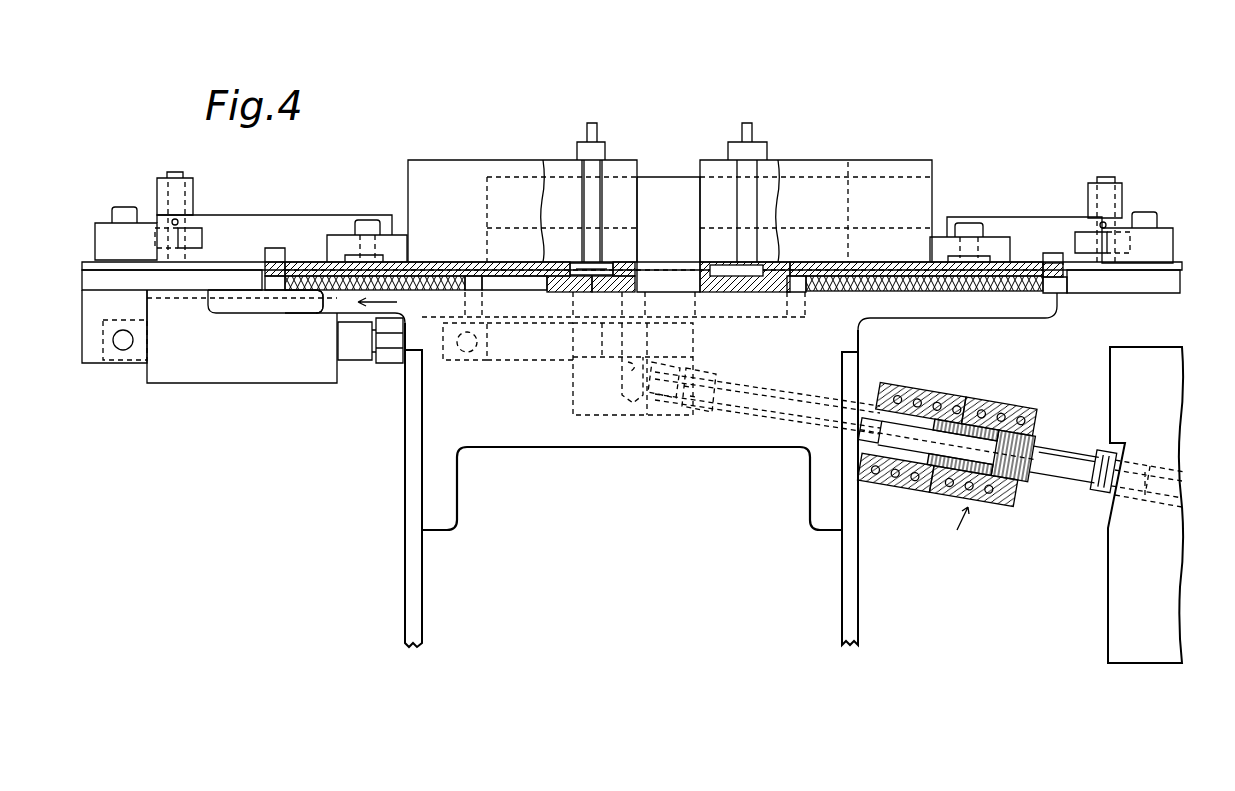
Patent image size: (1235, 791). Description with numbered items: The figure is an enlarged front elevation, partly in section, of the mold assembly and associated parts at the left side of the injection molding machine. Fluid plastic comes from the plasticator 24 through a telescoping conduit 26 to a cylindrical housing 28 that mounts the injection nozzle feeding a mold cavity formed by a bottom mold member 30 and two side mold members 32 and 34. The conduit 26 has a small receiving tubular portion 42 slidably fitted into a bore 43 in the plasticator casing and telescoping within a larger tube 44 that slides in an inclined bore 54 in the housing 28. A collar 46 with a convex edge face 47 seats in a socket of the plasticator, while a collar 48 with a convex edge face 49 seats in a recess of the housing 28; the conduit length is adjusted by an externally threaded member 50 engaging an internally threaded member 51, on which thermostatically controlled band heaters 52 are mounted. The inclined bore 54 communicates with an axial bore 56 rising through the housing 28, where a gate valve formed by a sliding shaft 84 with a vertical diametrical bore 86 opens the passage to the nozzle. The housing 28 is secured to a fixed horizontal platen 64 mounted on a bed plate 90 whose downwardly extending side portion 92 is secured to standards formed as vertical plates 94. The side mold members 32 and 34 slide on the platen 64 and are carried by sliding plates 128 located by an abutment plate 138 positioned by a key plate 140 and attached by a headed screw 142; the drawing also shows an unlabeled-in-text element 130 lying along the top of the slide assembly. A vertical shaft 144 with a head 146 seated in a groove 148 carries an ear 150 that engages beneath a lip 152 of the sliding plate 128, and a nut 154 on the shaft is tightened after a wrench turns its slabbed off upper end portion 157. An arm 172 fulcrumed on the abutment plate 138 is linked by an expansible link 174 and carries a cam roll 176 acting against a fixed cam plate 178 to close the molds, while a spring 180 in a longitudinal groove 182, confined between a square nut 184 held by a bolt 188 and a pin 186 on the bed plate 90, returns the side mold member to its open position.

The plasticator 24 is at (1110, 590).
The telescoping conduit 26 is at (960, 532).
The cylindrical housing 28 is at (600, 417).
The bottom mold member 30 is at (662, 186).
The side mold member 32 is at (440, 167).
The side mold member 34 is at (905, 167).
The receiving tubular portion 42 is at (1063, 464).
The bore 43 is at (1147, 496).
The tube 44 is at (770, 392).
The collar 46 is at (1103, 471).
The convex edge face 47 is at (1147, 478).
The collar 48 is at (697, 406).
The convex edge face 49 is at (684, 398).
The externally threaded member 50 is at (1013, 456).
The internally threaded member 51 is at (947, 444).
The band heaters 52 is at (947, 444).
The inclined bore 54 is at (653, 378).
The axial bore 56 is at (622, 380).
The platen 64 is at (90, 283).
The sliding shaft 84 is at (517, 352).
The vertical diametrical bore 86 is at (620, 333).
The bed plate 90 is at (220, 302).
The side portion 92 is at (735, 440).
The vertical plate 94 is at (418, 583).
The sliding plate 128 is at (527, 262).
The plate 130 is at (226, 262).
The abutment plate 138 is at (338, 245).
The key plate 140 is at (378, 257).
The headed screw 142 is at (366, 222).
The vertical shaft 144 is at (592, 208).
The head 146 is at (562, 280).
The groove 148 is at (592, 266).
The ear 150 is at (612, 280).
The lip 152 is at (632, 262).
The nut 154 is at (578, 152).
The slabbed off upper end portion 157 is at (597, 125).
The arm 172 is at (208, 222).
The expansible link 174 is at (165, 185).
The cam roll 176 is at (185, 238).
The cam plate 178 is at (96, 240).
The spring 180 is at (322, 300).
The longitudinal groove 182 is at (498, 277).
The square nut 184 is at (275, 292).
The pin 186 is at (470, 286).
The bolt 188 is at (274, 252).